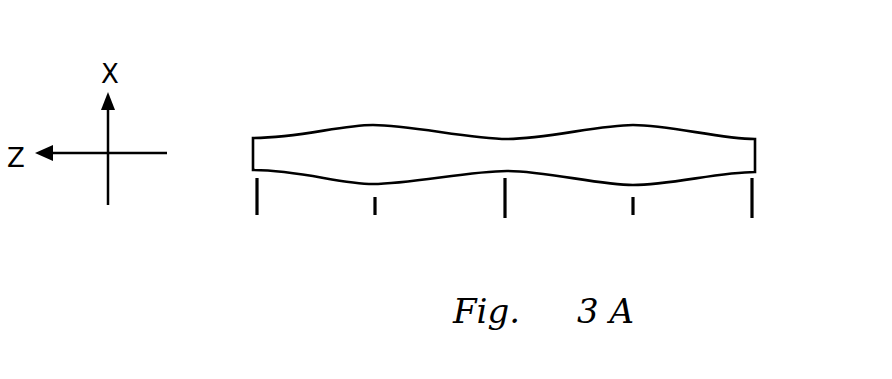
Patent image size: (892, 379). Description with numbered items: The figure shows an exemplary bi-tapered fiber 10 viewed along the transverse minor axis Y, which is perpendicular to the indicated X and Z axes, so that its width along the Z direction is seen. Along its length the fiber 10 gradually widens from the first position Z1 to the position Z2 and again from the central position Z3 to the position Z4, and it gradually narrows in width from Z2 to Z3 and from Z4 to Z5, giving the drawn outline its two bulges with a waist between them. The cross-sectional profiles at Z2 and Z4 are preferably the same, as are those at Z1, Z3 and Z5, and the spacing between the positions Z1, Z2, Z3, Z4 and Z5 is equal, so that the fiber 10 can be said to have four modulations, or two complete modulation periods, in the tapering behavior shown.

The bi-tapered fiber 10 is at (275, 120).
The axial position Z1 is at (267, 220).
The axial position Z2 is at (386, 230).
The axial position Z3 is at (509, 220).
The axial position Z4 is at (641, 230).
The axial position Z5 is at (760, 220).